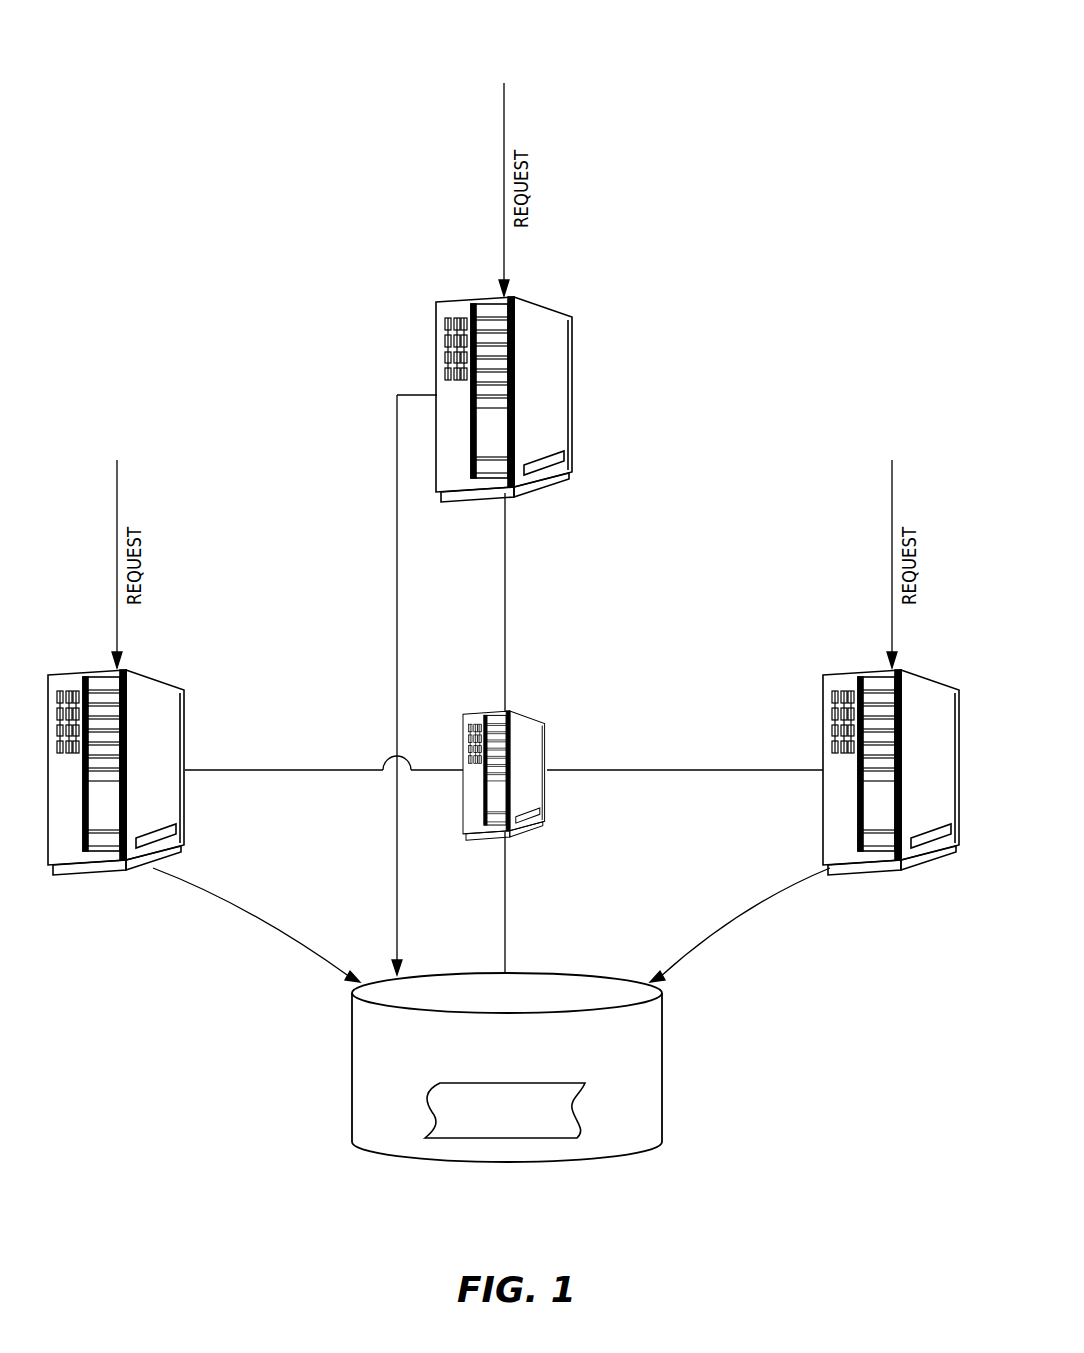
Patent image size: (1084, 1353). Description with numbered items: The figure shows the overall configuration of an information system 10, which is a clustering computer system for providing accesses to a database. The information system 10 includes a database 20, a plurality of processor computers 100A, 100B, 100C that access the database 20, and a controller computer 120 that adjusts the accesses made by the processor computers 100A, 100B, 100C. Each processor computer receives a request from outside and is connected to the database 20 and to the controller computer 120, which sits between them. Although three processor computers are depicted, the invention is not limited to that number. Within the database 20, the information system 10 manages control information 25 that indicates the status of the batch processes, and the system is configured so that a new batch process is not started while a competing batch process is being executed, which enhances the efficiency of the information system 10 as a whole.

The information system 10 is at (797, 29).
The processor computer 100A is at (155, 674).
The processor computer 100B is at (538, 497).
The processor computer 100C is at (855, 672).
The controller computer 120 is at (530, 712).
The database 20 is at (507, 1163).
The control information 25 is at (580, 1114).